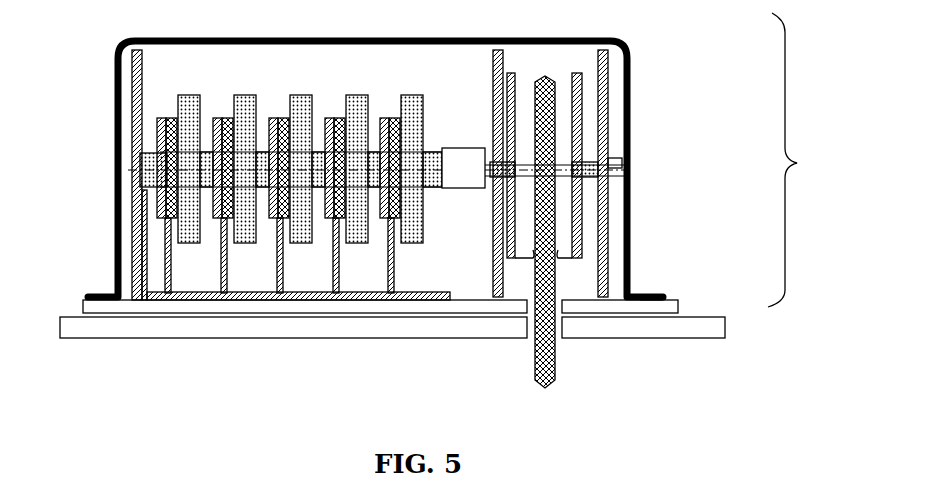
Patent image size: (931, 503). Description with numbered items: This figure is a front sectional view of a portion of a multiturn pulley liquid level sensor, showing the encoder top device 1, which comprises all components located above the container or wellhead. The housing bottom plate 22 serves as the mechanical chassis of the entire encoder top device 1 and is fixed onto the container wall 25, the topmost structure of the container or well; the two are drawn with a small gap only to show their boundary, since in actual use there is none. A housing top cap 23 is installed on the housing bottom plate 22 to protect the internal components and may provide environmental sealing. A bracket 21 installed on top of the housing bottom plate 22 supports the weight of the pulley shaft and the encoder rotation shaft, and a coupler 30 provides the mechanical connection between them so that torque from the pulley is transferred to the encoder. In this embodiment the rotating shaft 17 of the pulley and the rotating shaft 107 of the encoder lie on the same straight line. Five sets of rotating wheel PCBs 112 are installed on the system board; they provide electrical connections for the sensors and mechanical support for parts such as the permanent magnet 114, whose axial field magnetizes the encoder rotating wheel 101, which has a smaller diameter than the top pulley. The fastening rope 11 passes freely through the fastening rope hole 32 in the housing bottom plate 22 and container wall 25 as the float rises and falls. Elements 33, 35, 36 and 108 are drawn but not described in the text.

The encoder top device 1 is at (798, 163).
The fastening rope 11 is at (542, 350).
The rotating shaft 17 is at (622, 167).
The bracket 21 is at (145, 72).
The housing bottom plate 22 is at (667, 297).
The housing top cap 23 is at (632, 136).
The container wall 25 is at (650, 339).
The coupler 30 is at (477, 189).
The fastening rope hole 32 is at (560, 338).
The mounting plate 33 is at (200, 300).
The bearing seat 35 is at (576, 73).
The support arm 36 is at (586, 205).
The encoder rotating wheel 101 is at (407, 95).
The rotating shaft 107 is at (130, 170).
The side wall 108 is at (145, 147).
The rotating wheel PCB 112 is at (343, 265).
The permanent magnet 114 is at (328, 116).